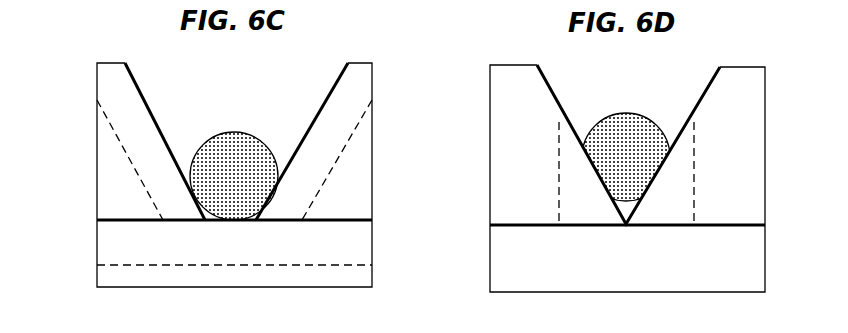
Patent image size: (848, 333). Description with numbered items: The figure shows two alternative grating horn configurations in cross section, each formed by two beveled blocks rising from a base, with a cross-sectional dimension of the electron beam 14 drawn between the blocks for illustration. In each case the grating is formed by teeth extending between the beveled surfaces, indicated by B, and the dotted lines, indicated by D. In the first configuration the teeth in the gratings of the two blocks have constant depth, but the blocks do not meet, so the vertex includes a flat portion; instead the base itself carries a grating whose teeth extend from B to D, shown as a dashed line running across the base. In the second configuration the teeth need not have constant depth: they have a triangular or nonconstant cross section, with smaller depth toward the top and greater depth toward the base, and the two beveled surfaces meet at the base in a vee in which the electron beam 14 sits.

In FIG. 6C, the electron beam 14 is at (237, 131).
In FIG. 6D, the electron beam 14 is at (628, 112).
In FIG. 6C, the beveled surface B is at (145, 100).
In FIG. 6D, the beveled surface B is at (557, 97).
In FIG. 6C, the dotted line D is at (130, 164).
In FIG. 6D, the dotted line D is at (559, 172).